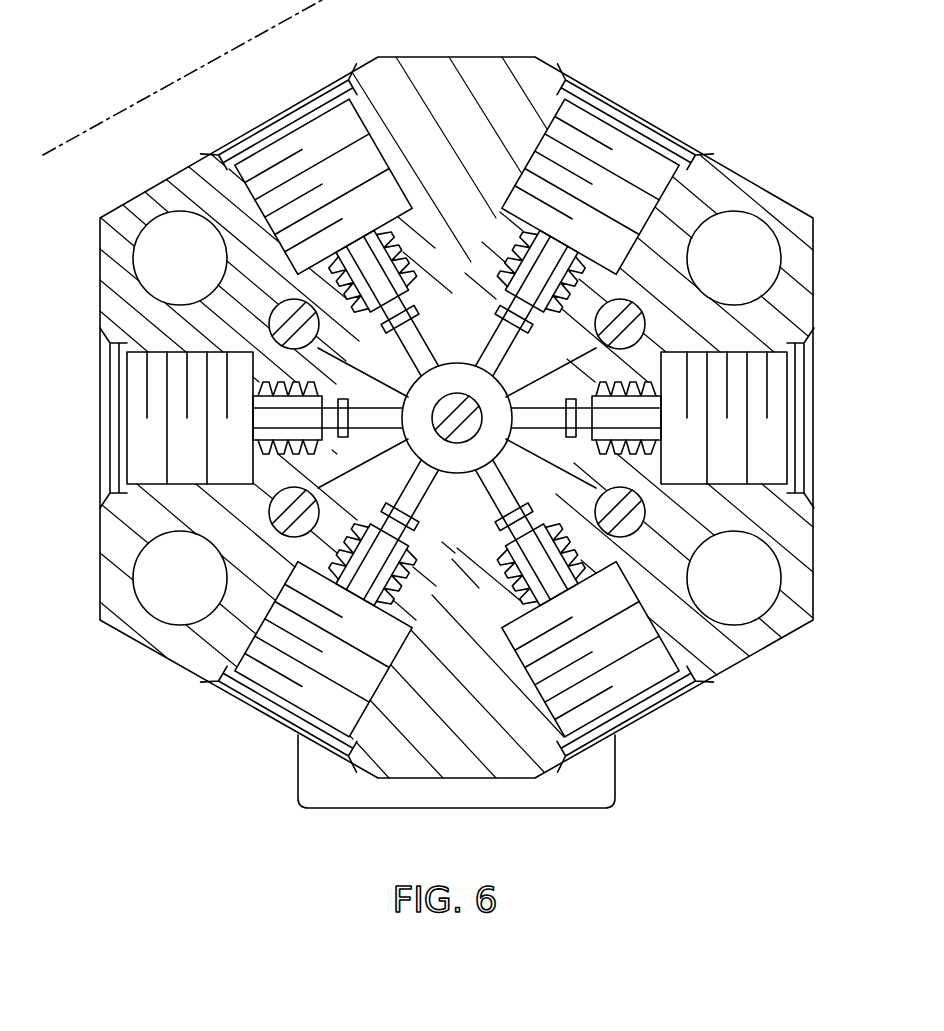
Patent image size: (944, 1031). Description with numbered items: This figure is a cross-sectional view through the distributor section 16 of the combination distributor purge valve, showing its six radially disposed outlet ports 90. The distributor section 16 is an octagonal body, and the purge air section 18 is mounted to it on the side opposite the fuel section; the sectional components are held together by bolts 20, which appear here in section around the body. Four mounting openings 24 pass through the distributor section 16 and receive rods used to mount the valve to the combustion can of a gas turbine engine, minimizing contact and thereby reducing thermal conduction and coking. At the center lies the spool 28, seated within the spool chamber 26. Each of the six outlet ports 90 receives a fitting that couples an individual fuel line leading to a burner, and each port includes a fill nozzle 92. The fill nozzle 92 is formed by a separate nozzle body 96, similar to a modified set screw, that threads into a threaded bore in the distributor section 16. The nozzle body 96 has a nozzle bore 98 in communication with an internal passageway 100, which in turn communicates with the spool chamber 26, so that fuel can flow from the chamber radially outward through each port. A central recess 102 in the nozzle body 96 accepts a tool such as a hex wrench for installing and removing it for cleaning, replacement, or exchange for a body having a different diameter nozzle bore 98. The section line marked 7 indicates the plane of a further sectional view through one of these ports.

The section line 7- 7 is at (378, 16).
The distributor section 16 is at (781, 196).
The purge air section 18 is at (462, 812).
The bolts 20 is at (280, 530).
The mounting openings 24 is at (163, 597).
The spool chamber 26 is at (455, 476).
The spool 28 is at (467, 412).
The outlet ports 90 is at (272, 131).
The fill nozzle 92 is at (403, 242).
The nozzle body 96 is at (504, 490).
The nozzle bore 98 is at (405, 535).
The internal passageway 100 is at (536, 422).
The central recess 102 is at (556, 580).